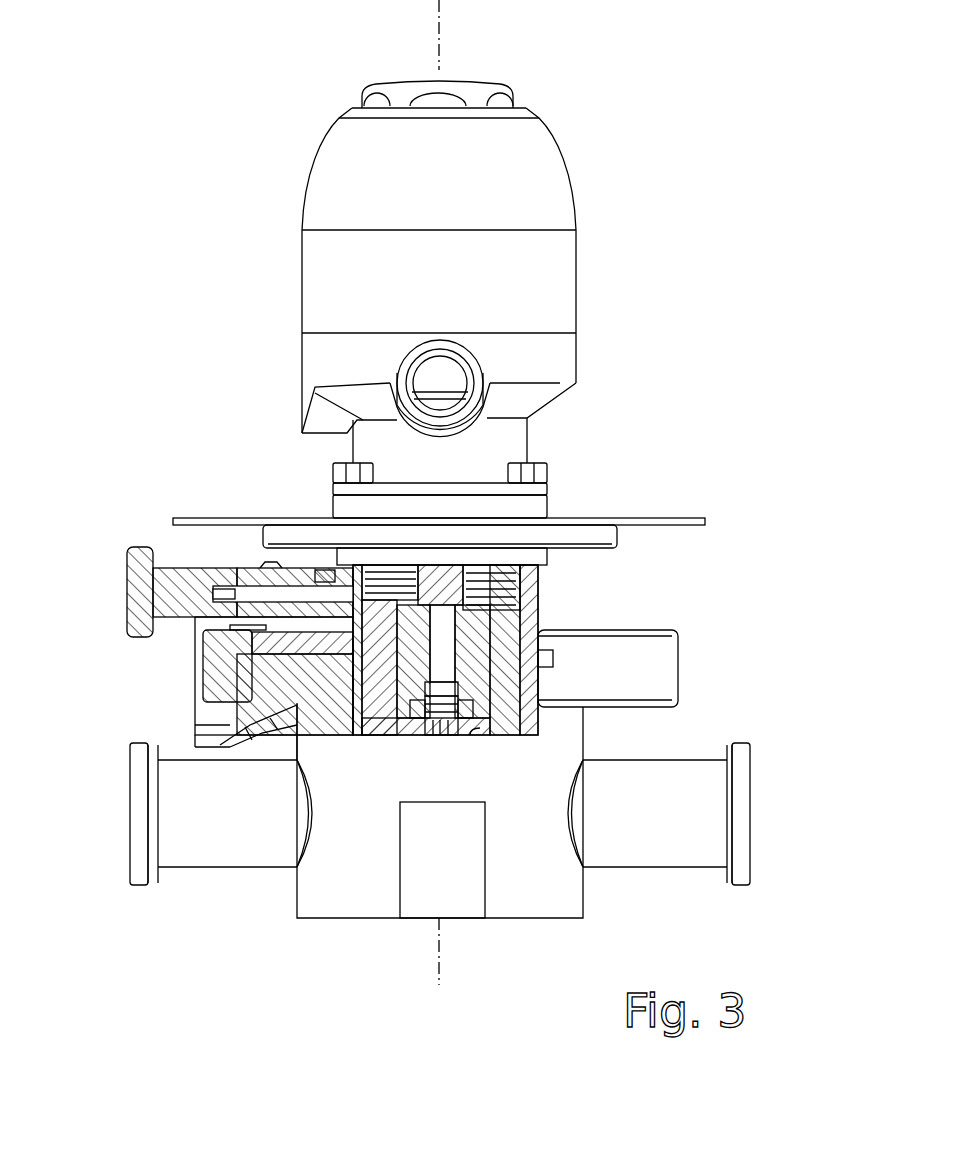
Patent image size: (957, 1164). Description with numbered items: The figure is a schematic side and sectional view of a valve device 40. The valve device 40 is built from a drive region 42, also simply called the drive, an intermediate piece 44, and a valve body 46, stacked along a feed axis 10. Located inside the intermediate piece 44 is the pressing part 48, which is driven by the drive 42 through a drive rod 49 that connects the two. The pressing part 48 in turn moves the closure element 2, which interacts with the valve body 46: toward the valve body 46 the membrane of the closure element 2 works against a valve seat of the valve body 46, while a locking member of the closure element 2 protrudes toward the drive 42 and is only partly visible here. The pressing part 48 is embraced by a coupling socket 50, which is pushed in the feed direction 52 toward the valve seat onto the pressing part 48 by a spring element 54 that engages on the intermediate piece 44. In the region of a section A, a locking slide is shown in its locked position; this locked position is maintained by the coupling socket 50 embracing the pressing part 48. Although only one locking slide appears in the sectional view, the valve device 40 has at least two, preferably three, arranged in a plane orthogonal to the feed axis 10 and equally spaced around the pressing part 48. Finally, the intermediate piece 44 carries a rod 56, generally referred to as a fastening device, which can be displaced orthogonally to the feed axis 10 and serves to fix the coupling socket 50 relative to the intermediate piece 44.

The feed axis 10 is at (437, 28).
The valve device 40 is at (668, 122).
The drive region 42 is at (557, 283).
The intermediate piece 44 is at (712, 508).
The valve body 46 is at (757, 725).
The pressing part 48 is at (468, 662).
The drive rod 49 is at (440, 550).
The coupling socket 50 is at (507, 687).
The feed direction 52 is at (657, 430).
The spring element 54 is at (490, 570).
The rod 56 is at (295, 593).
The closure element 2 is at (425, 705).
The section A is at (488, 740).